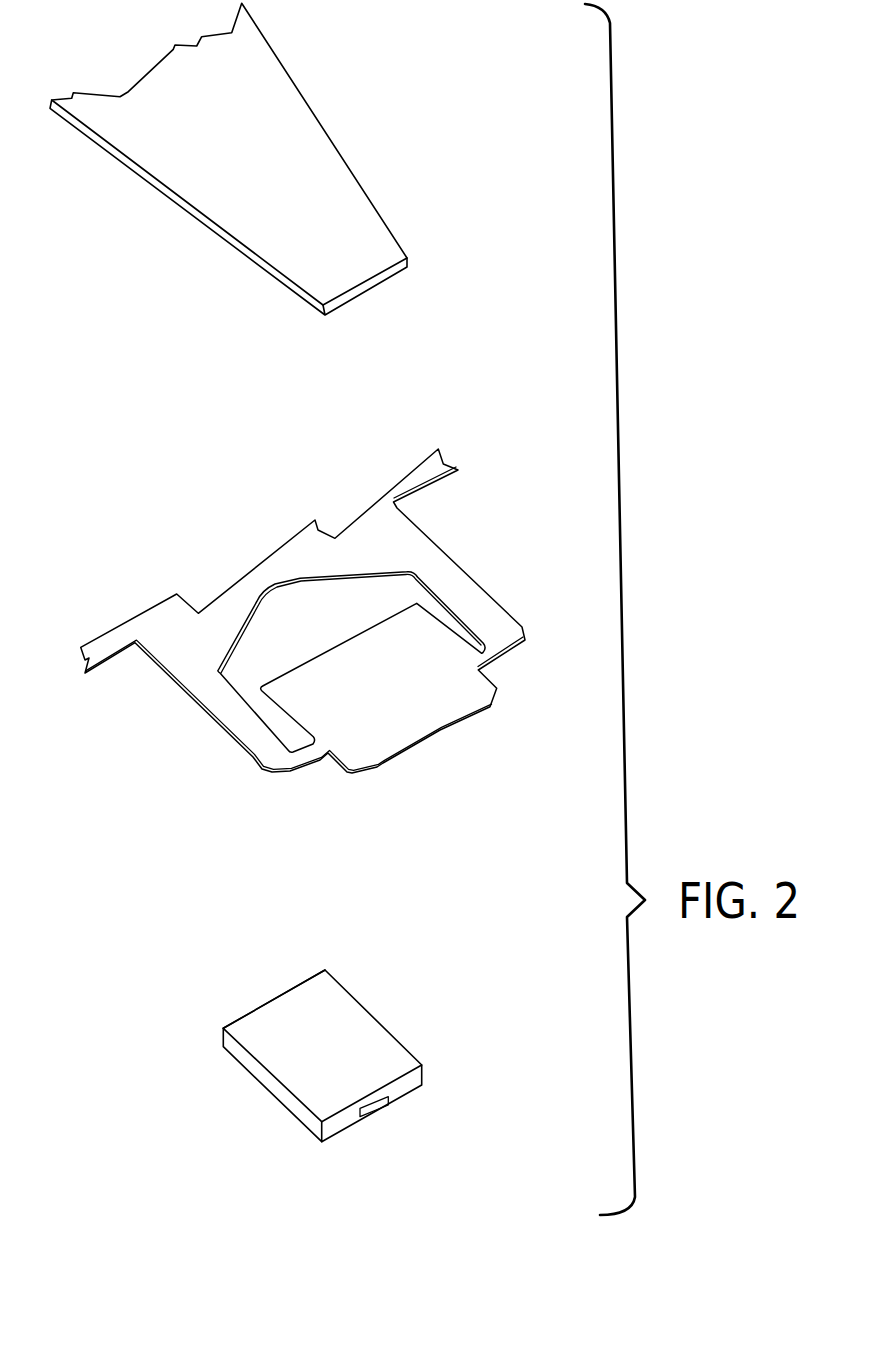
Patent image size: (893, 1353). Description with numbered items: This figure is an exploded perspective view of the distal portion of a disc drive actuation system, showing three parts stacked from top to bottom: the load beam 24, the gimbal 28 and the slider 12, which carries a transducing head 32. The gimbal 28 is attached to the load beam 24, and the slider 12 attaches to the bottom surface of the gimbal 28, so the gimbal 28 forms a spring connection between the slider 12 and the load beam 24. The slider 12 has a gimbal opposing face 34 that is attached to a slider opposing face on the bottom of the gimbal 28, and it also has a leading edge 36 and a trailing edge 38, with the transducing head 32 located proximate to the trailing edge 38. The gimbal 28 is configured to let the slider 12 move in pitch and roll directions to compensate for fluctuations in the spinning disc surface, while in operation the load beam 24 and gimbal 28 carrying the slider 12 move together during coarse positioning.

The slider 12 is at (333, 1034).
The load beam 24 is at (335, 193).
The gimbal 28 is at (435, 534).
The transducing head 32 is at (371, 1109).
The gimbal opposing face 34 is at (323, 1014).
The leading edge 36 is at (307, 972).
The trailing edge 38 is at (408, 1079).